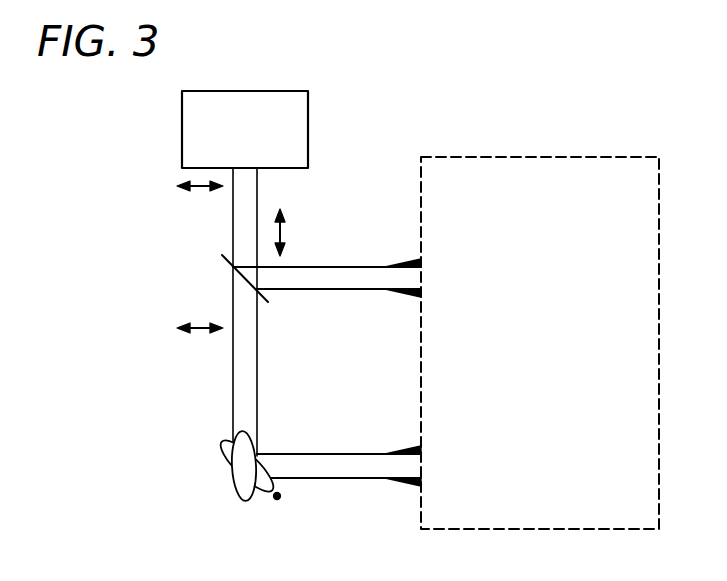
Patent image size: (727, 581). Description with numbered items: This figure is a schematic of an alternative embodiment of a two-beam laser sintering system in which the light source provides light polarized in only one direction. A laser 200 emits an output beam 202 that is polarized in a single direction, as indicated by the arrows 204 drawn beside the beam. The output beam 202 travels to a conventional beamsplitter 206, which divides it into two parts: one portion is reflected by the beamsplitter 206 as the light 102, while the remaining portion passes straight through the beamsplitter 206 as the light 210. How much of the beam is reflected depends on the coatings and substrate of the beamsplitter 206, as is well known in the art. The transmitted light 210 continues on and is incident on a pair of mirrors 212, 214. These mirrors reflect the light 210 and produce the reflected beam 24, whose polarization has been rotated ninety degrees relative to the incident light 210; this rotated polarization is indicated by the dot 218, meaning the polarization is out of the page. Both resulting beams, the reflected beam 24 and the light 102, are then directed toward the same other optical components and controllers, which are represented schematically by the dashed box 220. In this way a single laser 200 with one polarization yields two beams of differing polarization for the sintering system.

The laser 200 is at (308, 99).
The output beam 202 is at (233, 208).
The arrows 204 is at (201, 192).
The beamsplitter 206 is at (222, 258).
The light 102 is at (334, 276).
The light 210 is at (244, 391).
The mirror 212 is at (222, 441).
The mirror 214 is at (240, 500).
The dot 218 is at (277, 496).
The reflected beam 24 is at (340, 463).
The dashed box 220 is at (526, 146).